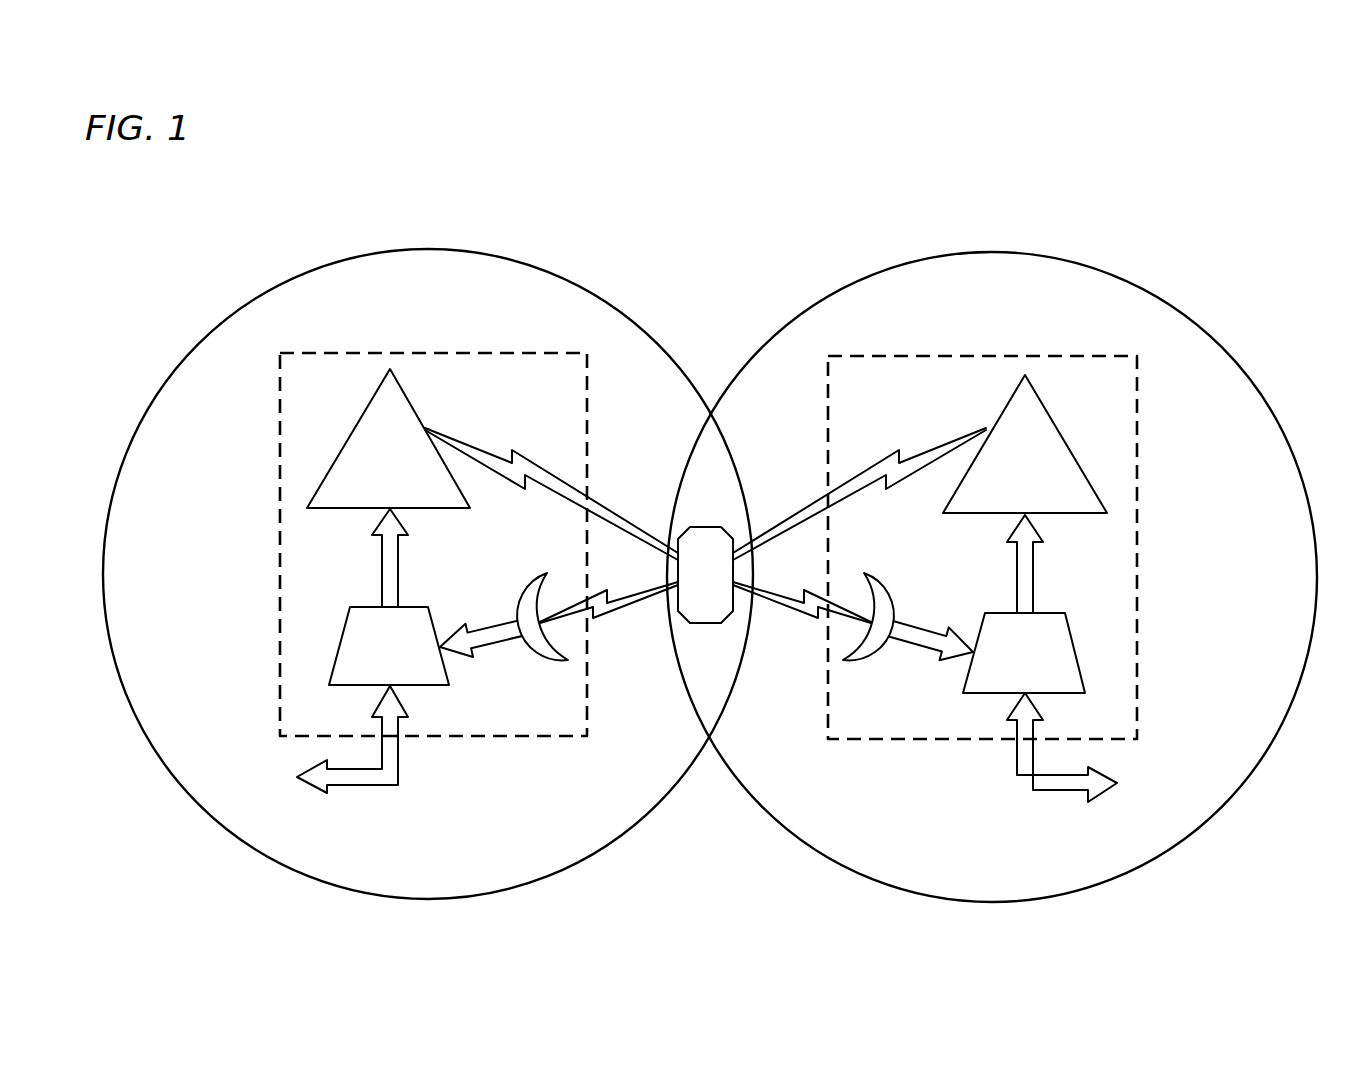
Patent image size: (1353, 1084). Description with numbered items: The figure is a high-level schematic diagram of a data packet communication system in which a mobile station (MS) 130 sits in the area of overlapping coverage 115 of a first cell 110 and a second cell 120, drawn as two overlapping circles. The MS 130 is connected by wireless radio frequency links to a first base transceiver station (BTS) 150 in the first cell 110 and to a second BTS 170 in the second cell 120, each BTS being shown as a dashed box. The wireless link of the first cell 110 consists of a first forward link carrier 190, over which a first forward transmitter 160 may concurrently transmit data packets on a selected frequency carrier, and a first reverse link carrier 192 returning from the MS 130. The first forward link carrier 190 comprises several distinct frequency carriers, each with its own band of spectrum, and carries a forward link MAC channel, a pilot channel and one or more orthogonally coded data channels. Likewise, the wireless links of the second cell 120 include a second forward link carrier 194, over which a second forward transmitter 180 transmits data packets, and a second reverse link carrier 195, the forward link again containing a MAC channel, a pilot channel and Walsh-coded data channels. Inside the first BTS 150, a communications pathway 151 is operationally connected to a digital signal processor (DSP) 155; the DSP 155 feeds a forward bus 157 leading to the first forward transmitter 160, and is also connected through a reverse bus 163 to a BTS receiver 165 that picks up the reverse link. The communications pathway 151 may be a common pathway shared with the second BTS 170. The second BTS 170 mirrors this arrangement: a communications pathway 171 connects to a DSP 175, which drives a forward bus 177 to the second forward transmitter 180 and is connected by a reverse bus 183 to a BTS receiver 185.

The first cell 110 is at (200, 247).
The second cell 120 is at (1063, 244).
The area of overlapping coverage 115 is at (712, 465).
The mobile station 130 is at (708, 618).
The first base transceiver station 150 is at (456, 350).
The communications pathway 151 is at (317, 780).
The digital signal processor 155 is at (352, 628).
The forward bus 157 is at (384, 558).
The first forward transmitter 160 is at (371, 418).
The reverse bus 163 is at (485, 642).
The BTS receiver 165 is at (537, 653).
The second base transceiver station 170 is at (965, 352).
The communications pathway 171 is at (1097, 790).
The digital signal processor 175 is at (1063, 635).
The forward bus 177 is at (1030, 563).
The second forward transmitter 180 is at (1048, 425).
The reverse bus 183 is at (930, 643).
The BTS receiver 185 is at (877, 655).
The first forward link carrier 190 is at (617, 517).
The first reverse link carrier 192 is at (613, 612).
The second forward link carrier 194 is at (790, 515).
The second reverse link carrier 195 is at (800, 610).